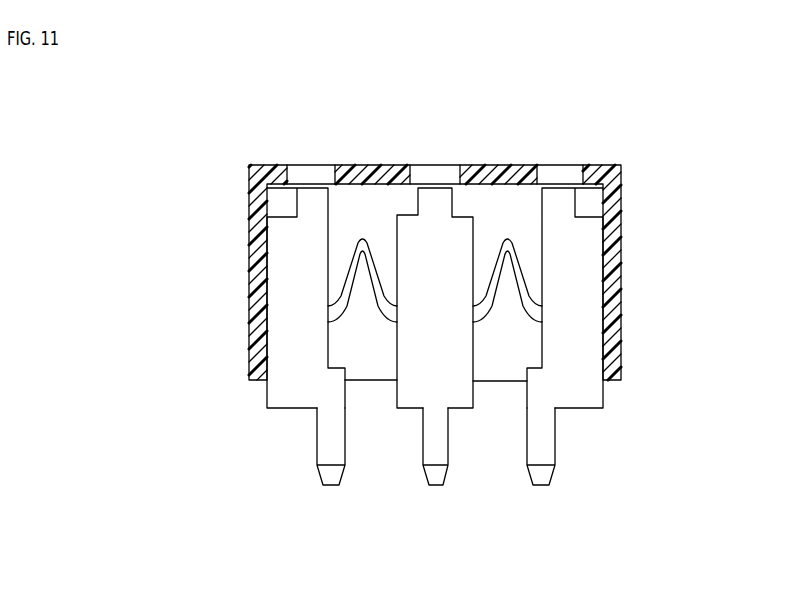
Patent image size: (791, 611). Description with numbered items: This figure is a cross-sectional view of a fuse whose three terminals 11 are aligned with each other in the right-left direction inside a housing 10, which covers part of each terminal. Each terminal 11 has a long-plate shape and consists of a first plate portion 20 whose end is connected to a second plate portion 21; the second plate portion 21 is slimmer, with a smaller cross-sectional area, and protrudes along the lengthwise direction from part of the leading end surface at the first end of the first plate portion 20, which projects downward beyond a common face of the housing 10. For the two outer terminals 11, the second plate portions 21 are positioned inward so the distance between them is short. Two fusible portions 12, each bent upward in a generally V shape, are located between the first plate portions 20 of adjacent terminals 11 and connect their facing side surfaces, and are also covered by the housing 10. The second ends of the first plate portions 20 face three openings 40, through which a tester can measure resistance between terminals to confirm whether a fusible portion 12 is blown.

The housing 10 is at (623, 200).
The terminal 11 is at (262, 488).
The fusible portion 12 is at (363, 240).
The first plate portion 20 is at (275, 393).
The second plate portion 21 is at (320, 436).
The opening 40 is at (293, 165).